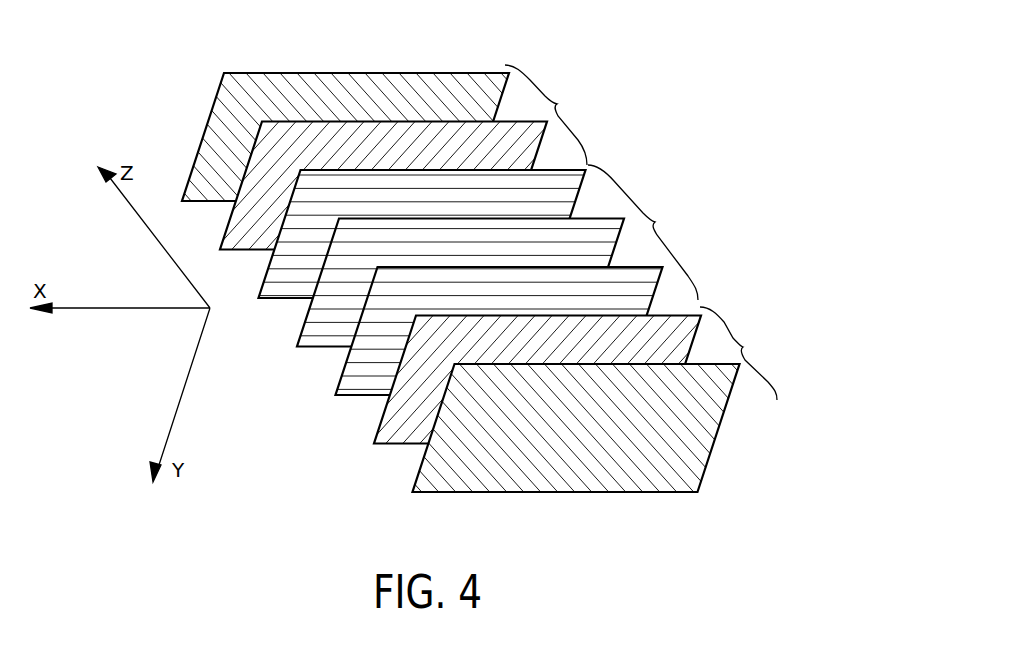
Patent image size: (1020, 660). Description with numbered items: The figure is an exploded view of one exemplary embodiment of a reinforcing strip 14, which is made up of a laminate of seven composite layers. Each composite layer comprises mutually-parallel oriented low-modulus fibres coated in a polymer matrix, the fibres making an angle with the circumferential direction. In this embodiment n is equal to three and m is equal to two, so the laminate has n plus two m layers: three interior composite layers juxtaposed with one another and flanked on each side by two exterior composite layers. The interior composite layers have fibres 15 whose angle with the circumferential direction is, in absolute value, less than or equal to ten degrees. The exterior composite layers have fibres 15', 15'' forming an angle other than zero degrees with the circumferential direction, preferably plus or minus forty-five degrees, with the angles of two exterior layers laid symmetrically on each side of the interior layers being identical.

The reinforcing strip 14 is at (523, 316).
The fibres of interior composite layer 15 is at (461, 316).
The fibres of exterior composite layer 15' is at (576, 465).
The fibres of exterior composite layer 15'' is at (529, 416).